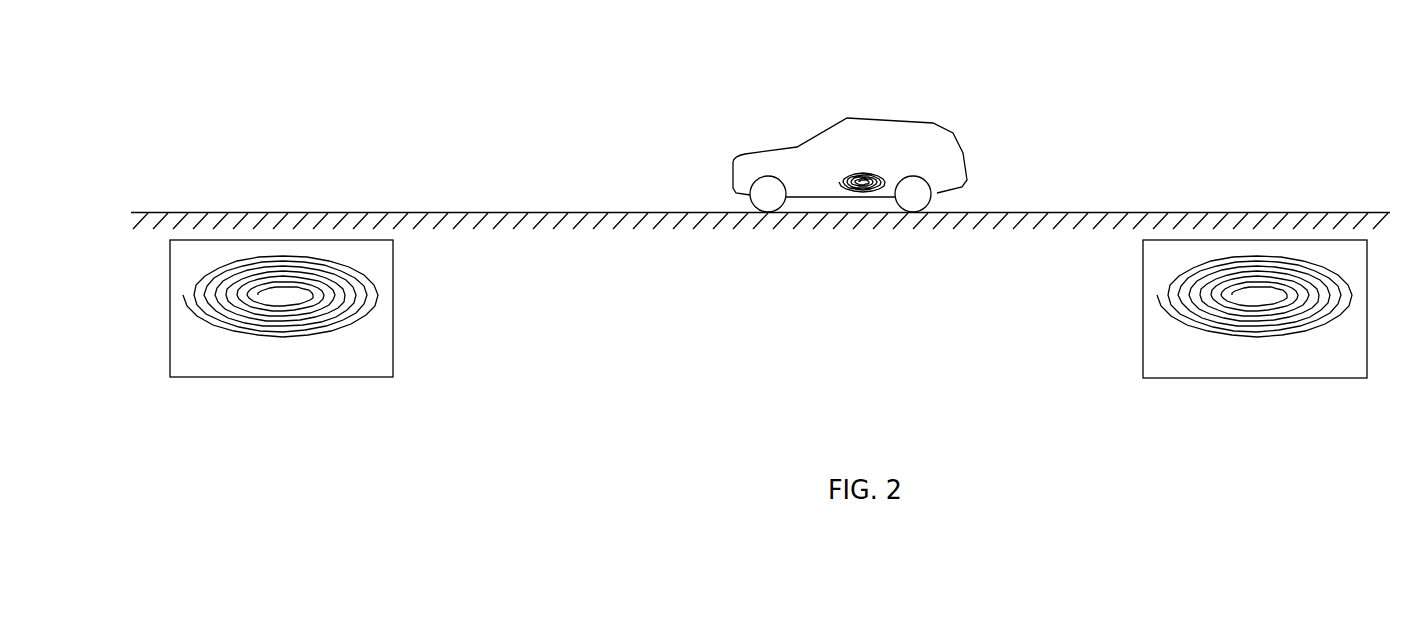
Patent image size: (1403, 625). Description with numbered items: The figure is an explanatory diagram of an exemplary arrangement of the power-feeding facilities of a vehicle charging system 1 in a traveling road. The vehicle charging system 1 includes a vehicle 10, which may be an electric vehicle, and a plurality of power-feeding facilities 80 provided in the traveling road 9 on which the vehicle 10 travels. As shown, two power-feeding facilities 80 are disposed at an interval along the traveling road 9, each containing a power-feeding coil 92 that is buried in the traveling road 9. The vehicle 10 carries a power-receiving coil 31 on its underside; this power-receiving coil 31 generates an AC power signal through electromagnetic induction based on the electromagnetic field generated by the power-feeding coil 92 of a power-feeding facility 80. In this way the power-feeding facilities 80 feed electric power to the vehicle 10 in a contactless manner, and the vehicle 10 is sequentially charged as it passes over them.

The vehicle charging system 1 is at (1287, 76).
The traveling road 9 is at (1121, 212).
The vehicle 10 is at (915, 120).
The power-receiving coil 31 is at (867, 168).
The power-feeding facility 80 is at (292, 377).
The power-feeding coil 92 is at (340, 330).